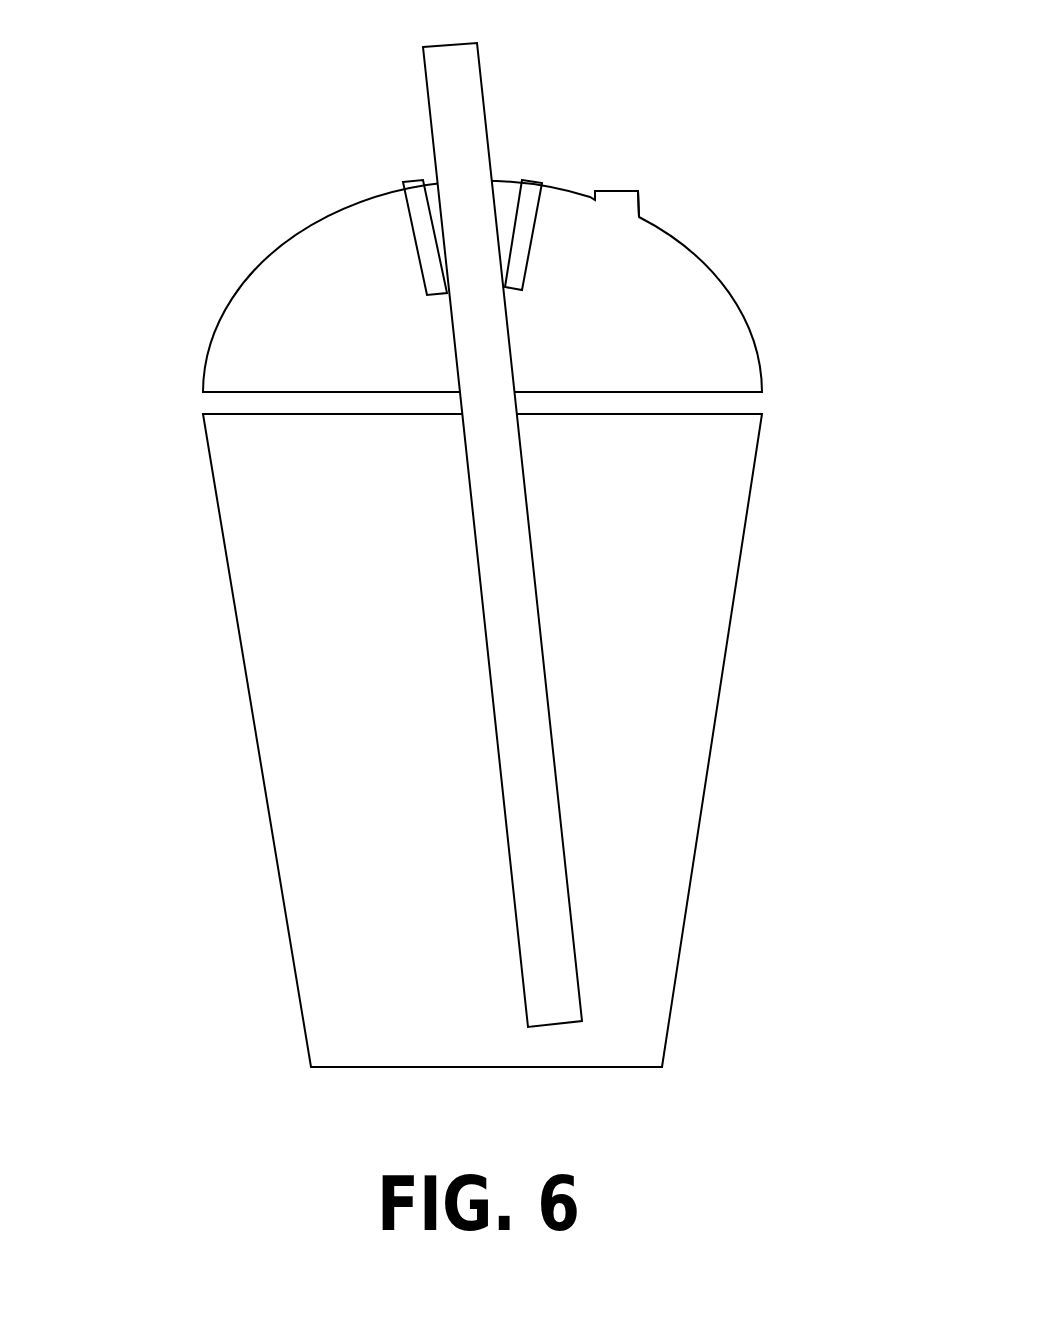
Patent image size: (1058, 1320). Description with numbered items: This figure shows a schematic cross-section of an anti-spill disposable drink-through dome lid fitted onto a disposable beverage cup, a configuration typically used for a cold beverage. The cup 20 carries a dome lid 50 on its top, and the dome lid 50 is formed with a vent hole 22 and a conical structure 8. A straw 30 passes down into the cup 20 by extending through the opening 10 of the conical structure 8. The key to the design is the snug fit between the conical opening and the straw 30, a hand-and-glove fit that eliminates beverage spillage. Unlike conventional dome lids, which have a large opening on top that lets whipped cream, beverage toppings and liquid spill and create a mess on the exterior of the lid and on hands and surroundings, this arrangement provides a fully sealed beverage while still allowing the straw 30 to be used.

The opening 10 is at (473, 232).
The conical structure 8 is at (398, 181).
The vent hole 22 is at (622, 180).
The dome lid 50 is at (738, 305).
The cup 20 is at (728, 633).
The straw 30 is at (489, 136).